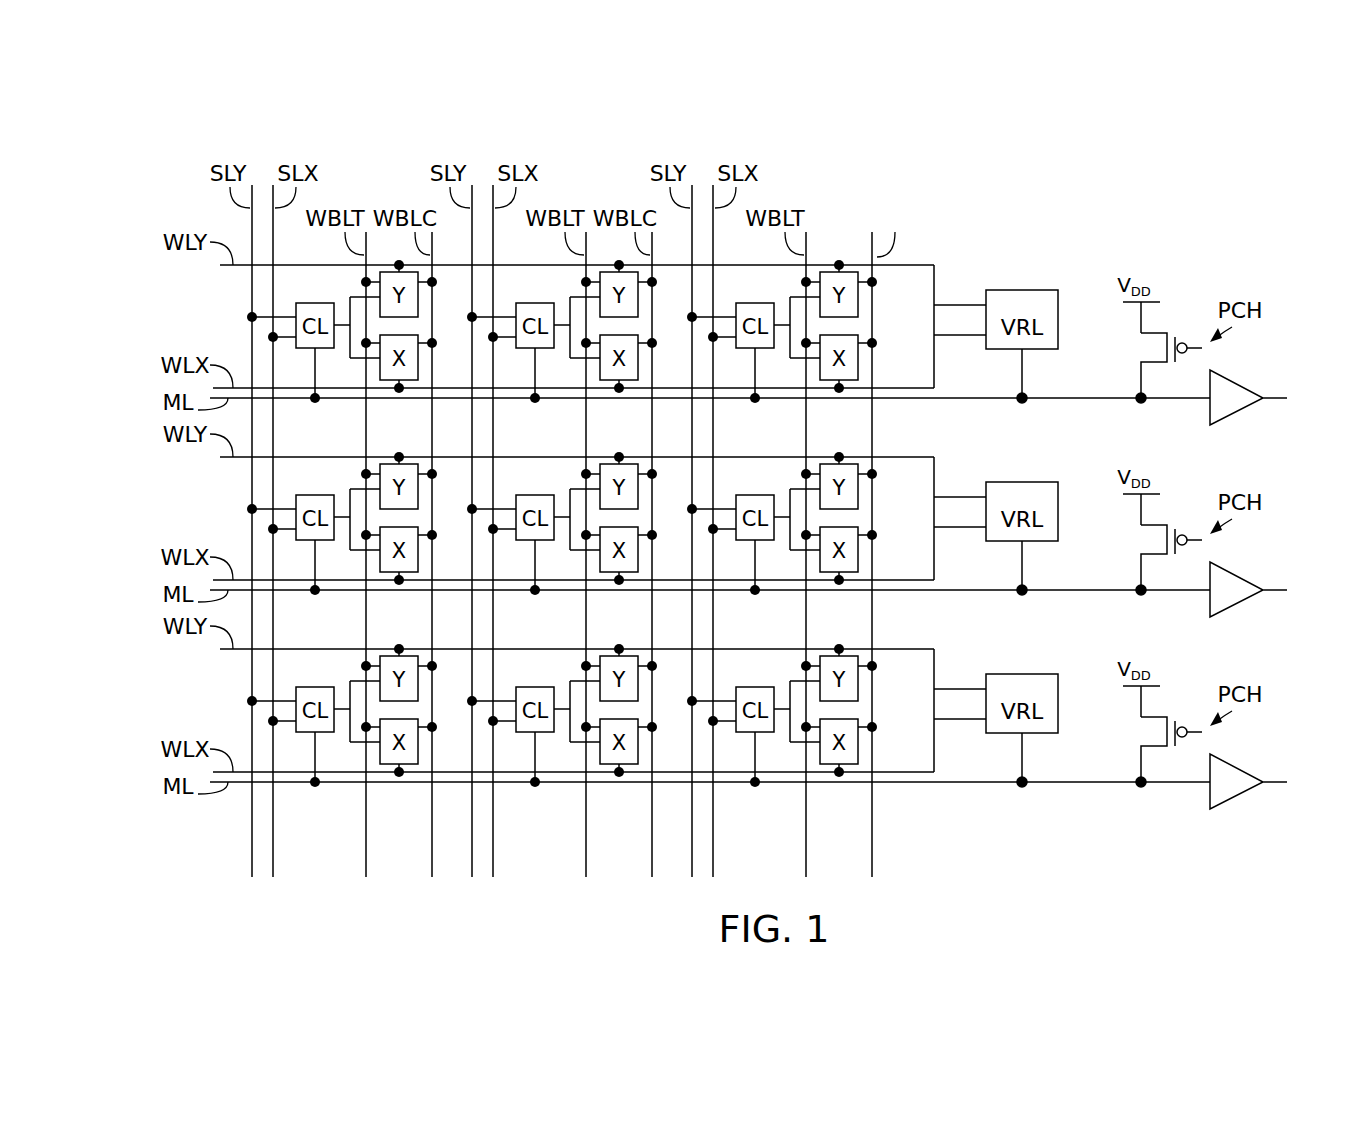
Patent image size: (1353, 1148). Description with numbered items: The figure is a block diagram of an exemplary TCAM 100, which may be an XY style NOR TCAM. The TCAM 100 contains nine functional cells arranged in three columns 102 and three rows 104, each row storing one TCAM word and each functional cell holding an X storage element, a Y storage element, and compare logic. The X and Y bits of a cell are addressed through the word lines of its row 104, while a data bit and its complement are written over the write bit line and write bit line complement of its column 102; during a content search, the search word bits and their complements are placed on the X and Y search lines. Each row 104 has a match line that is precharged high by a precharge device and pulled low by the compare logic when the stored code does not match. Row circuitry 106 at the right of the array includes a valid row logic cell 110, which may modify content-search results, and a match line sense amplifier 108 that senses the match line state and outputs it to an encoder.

The TCAM 100 is at (1008, 892).
The column 102 is at (574, 474).
The row 104 is at (658, 514).
The match line sensing circuitry 106 is at (1018, 114).
The match line sense amplifier 108 is at (1250, 601).
The valid row logic cell 110 is at (1046, 538).